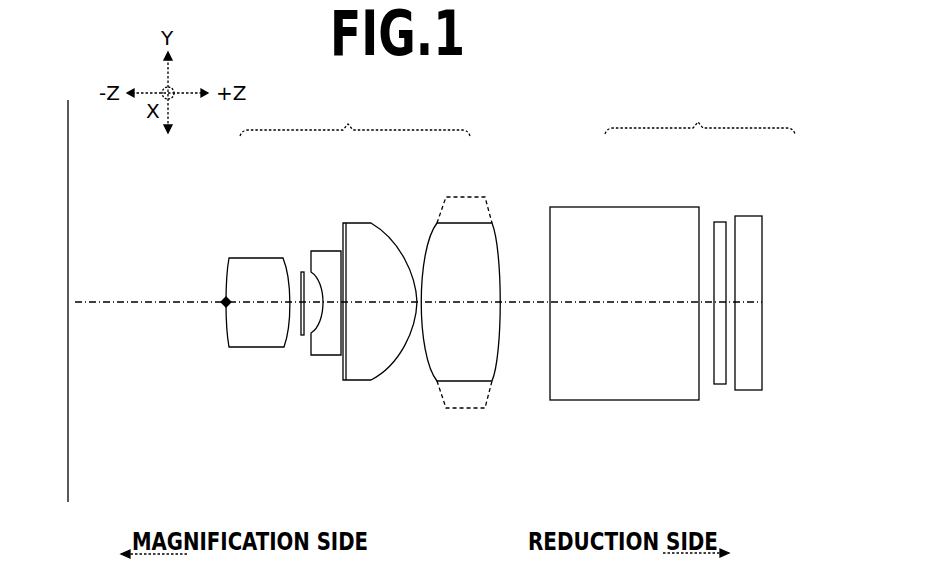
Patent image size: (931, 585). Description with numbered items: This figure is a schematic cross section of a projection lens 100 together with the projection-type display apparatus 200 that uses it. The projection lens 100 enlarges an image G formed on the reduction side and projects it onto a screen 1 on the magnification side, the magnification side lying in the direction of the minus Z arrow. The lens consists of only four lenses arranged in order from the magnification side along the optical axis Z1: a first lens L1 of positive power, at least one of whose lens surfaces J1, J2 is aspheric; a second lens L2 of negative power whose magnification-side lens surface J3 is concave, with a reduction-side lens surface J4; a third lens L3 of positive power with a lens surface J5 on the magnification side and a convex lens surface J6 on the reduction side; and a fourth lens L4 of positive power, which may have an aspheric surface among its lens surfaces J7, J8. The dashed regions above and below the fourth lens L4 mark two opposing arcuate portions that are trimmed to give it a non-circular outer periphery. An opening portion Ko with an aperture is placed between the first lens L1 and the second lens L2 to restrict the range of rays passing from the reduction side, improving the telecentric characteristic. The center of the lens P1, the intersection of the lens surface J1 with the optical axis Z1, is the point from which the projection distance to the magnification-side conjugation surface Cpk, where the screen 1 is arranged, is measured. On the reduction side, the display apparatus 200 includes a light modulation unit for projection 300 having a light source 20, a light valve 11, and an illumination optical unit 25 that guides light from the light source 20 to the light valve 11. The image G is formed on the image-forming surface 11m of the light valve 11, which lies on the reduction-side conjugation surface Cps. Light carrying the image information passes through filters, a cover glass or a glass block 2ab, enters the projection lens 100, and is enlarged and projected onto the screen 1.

The projection lens 100 is at (355, 118).
The projection-type display apparatus 200 is at (681, 76).
The light modulation unit for projection 300 is at (700, 117).
The first lens L1 is at (258, 258).
The second lens L2 is at (328, 251).
The third lens L3 is at (356, 223).
The fourth lens L4 is at (453, 196).
The lens surface J1 is at (228, 342).
The lens surface J2 is at (286, 342).
The lens surface J3 is at (303, 337).
The lens surface J4 is at (318, 356).
The lens surface J5 is at (345, 382).
The lens surface J6 is at (392, 373).
The lens surface J7 is at (433, 373).
The lens surface J8 is at (497, 373).
The center of the lens P1 is at (222, 306).
The optical axis Z1 is at (115, 298).
The opening portion Ko is at (300, 268).
The glass block 2ab is at (630, 214).
The light valve 11 is at (740, 298).
The image-forming surface 11m is at (740, 320).
The conjugation surface Cps is at (708, 282).
The light source 20 is at (761, 263).
The illumination optical unit 25 is at (753, 216).
The image G is at (712, 222).
The conjugation surface Cpk is at (108, 279).
The screen 1 is at (68, 110).